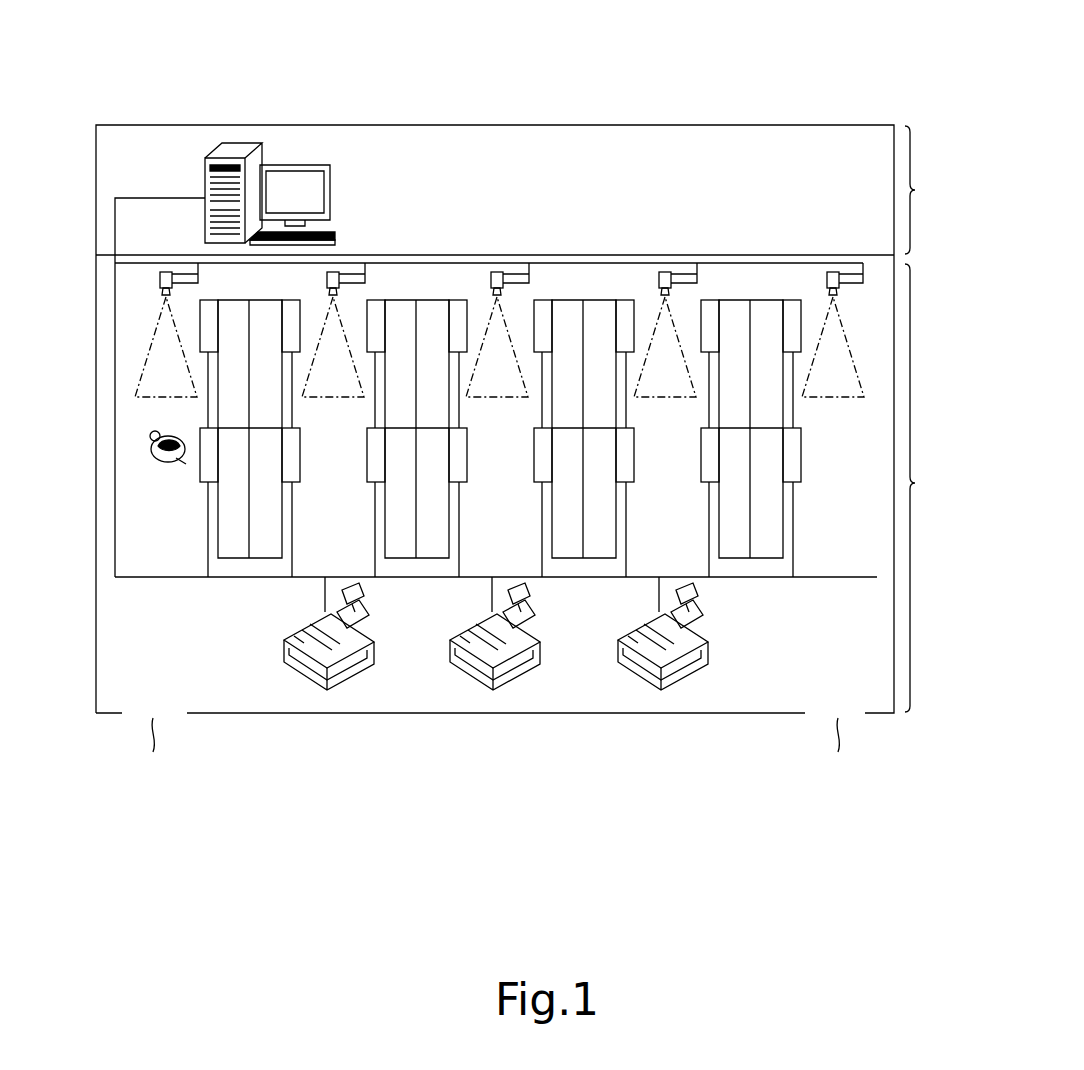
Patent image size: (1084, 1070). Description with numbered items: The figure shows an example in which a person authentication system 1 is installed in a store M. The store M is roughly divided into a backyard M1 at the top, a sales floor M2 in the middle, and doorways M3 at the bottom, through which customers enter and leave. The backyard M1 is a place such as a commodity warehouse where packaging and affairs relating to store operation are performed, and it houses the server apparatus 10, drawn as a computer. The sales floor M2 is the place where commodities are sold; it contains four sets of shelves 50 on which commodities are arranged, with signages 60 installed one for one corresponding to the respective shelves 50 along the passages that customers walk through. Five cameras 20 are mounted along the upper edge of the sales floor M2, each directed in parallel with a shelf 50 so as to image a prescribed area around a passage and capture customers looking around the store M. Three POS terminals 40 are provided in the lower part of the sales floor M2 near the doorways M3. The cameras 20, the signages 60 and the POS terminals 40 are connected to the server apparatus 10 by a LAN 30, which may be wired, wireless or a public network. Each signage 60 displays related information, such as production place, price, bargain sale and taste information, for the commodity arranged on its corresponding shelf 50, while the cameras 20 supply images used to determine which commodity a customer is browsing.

The person authentication system 1 is at (297, 90).
The store M is at (495, 361).
The backyard M1 is at (927, 190).
The sales floor M2 is at (927, 488).
The doorways M3 is at (494, 760).
The server apparatus 10 is at (251, 140).
The camera 20 is at (166, 270).
The LAN 30 is at (420, 258).
The POS terminal 40 is at (353, 683).
The shelf 50 is at (240, 558).
The signage 60 is at (200, 350).